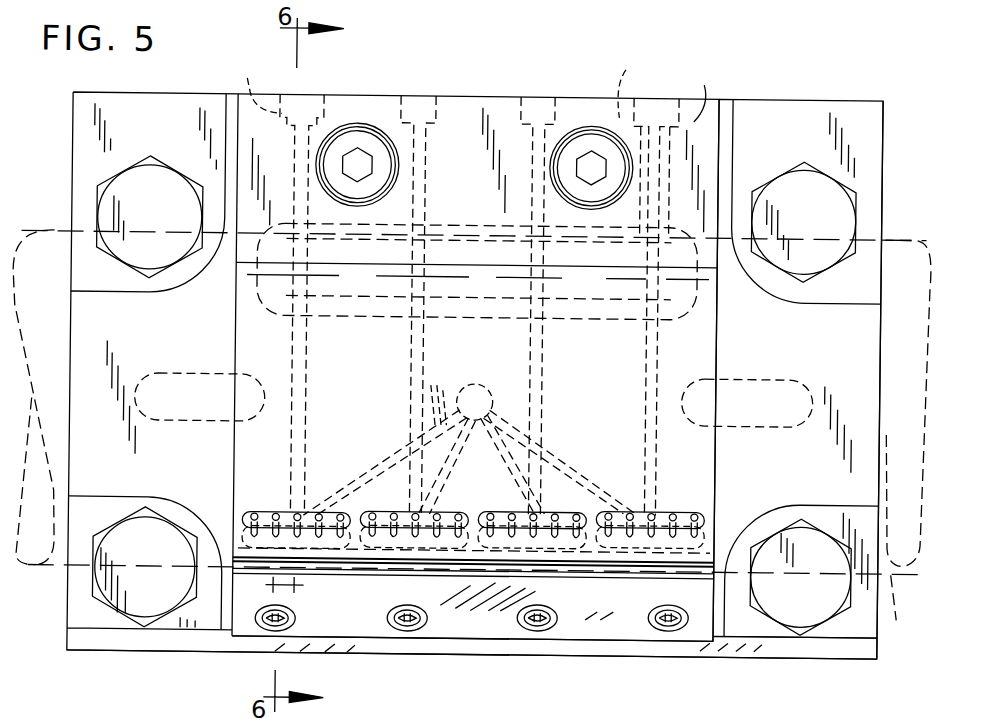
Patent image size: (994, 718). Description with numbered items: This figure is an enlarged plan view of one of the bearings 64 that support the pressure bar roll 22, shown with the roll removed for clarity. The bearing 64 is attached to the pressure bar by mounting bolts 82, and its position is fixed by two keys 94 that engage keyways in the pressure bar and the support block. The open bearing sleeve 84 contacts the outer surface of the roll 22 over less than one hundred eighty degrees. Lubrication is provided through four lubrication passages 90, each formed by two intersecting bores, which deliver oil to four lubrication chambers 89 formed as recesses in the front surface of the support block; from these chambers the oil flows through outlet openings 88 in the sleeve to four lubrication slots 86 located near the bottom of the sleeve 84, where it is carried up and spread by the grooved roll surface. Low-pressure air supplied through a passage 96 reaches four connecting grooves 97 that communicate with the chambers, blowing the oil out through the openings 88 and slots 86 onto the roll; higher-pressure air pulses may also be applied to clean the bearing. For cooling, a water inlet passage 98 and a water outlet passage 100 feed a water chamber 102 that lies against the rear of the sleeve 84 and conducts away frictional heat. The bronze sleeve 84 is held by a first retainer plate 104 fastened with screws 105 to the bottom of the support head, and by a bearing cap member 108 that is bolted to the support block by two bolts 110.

The pressure bar roll 22 is at (470, 439).
The bearing 64 is at (475, 82).
The mounting bolts 82 is at (158, 215).
The bearing sleeve 84 is at (705, 337).
The lubrication slots 86 is at (381, 509).
The outlet openings 88 is at (277, 510).
The lubrication chambers 89 is at (355, 565).
The lubrication passages 90 is at (297, 94).
The keys 94 is at (196, 371).
The air passage 96 is at (482, 378).
The connecting grooves 97 is at (437, 396).
The water inlet passage 98 is at (257, 85).
The water outlet passage 100 is at (626, 82).
The water chamber 102 is at (460, 218).
The first retainer plate 104 is at (466, 608).
The screws 105 is at (395, 606).
The bearing cap member 108 is at (704, 93).
The bolts 110 is at (363, 139).